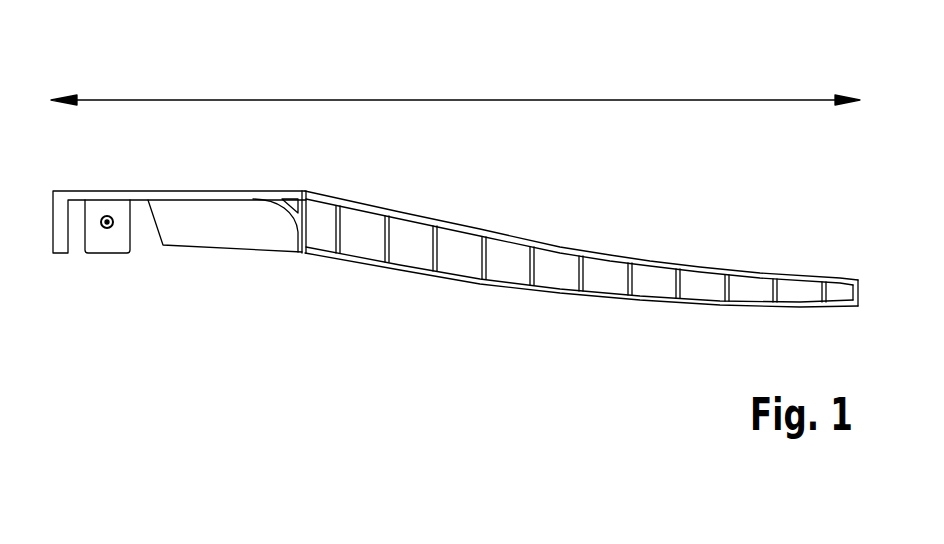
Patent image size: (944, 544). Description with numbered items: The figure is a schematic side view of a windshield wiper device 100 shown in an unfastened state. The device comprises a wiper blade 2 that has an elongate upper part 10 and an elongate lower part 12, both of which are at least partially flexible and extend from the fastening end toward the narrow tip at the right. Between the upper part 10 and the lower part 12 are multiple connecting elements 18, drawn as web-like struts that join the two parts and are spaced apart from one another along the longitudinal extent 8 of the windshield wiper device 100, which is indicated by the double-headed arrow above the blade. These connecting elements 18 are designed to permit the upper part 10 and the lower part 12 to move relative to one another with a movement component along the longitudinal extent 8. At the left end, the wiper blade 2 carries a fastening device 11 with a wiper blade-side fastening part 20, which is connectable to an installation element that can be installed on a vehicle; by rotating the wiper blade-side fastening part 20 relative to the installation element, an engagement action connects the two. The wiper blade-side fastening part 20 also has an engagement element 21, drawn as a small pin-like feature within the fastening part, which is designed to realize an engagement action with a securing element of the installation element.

The windshield wiper device 100 is at (99, 40).
The longitudinal extent 8 is at (475, 100).
The wiper blade 2 is at (400, 313).
The fastening device 11 is at (221, 211).
The wiper blade-side fastening part 20 is at (90, 253).
The engagement element 21 is at (108, 229).
The upper part 10 is at (650, 262).
The lower part 12 is at (522, 289).
The connecting elements 18 is at (823, 290).